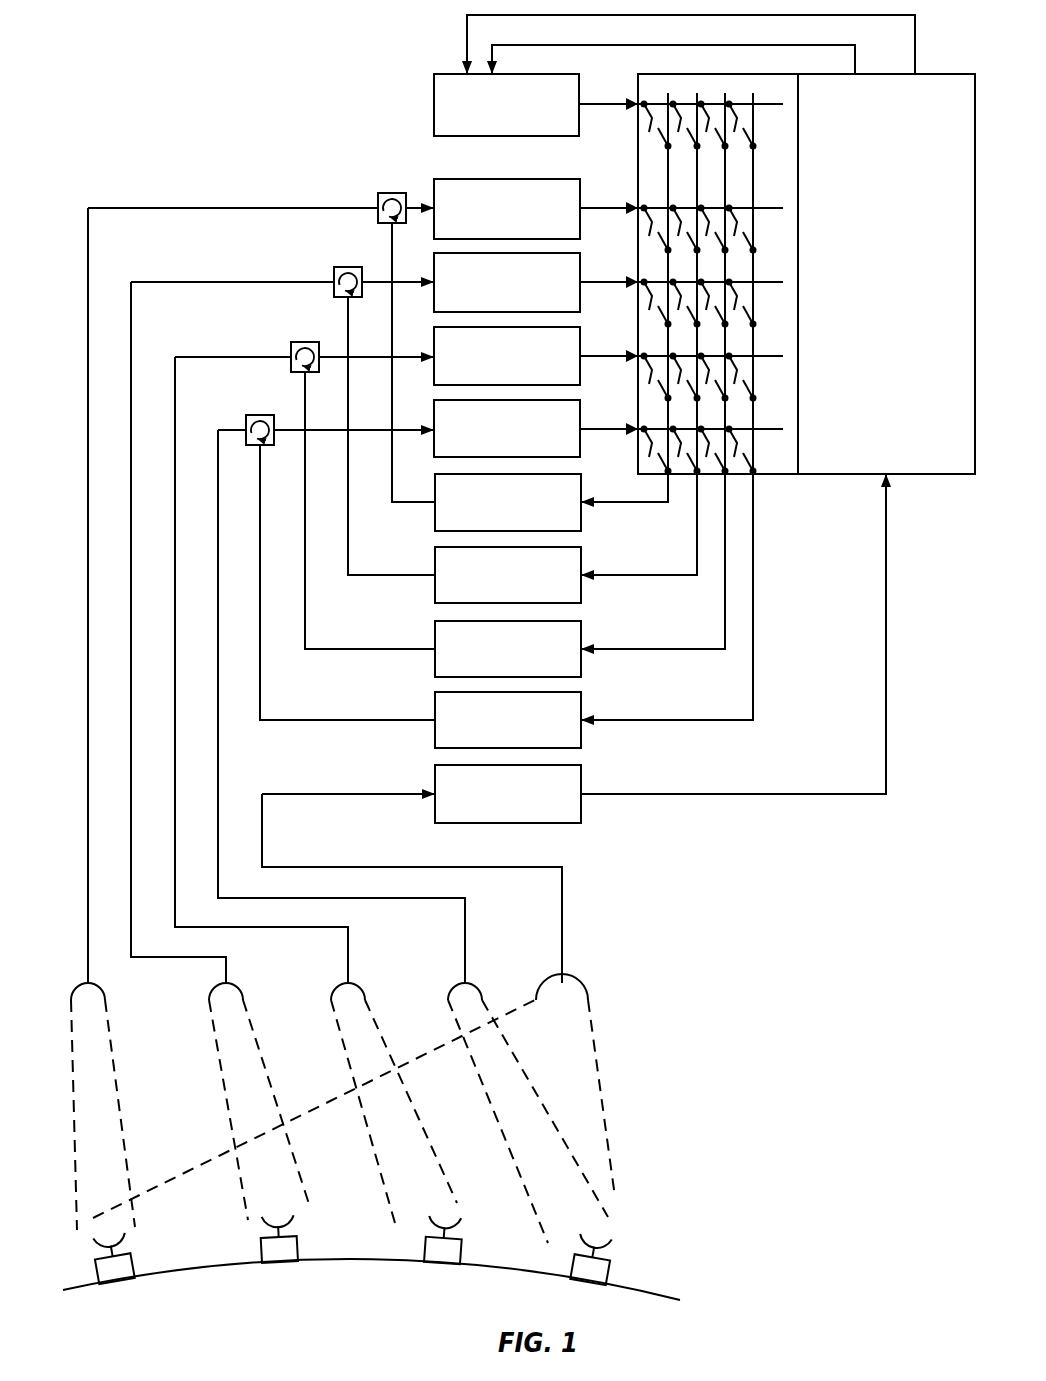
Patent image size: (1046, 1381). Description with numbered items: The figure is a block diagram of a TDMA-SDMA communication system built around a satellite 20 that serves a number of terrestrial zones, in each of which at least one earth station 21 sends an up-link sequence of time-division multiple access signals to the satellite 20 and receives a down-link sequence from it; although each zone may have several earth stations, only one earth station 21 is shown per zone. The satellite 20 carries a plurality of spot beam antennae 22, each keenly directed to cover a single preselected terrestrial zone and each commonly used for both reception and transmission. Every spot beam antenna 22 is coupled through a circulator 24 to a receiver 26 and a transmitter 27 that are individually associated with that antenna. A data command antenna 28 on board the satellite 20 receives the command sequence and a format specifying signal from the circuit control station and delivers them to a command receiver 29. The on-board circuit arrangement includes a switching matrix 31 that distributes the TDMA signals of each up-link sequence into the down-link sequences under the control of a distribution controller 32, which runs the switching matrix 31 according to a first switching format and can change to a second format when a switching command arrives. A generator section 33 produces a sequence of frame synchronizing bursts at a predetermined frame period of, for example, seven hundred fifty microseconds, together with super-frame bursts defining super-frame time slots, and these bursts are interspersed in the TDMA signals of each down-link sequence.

The satellite 20 is at (590, 910).
The earth station 21 is at (607, 1268).
The spot beam antenna 22 is at (100, 990).
The circulator 24 is at (392, 193).
The receiver 26 is at (558, 179).
The transmitter 27 is at (582, 490).
The data command antenna 28 is at (587, 989).
The command receiver 29 is at (584, 783).
The switching matrix 31 is at (764, 74).
The distribution controller 32 is at (932, 74).
The generator section 33 is at (554, 74).